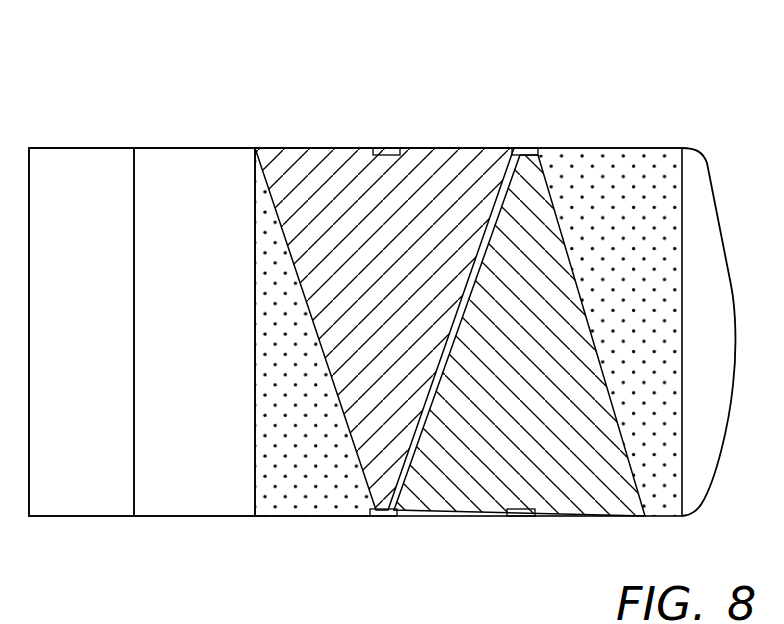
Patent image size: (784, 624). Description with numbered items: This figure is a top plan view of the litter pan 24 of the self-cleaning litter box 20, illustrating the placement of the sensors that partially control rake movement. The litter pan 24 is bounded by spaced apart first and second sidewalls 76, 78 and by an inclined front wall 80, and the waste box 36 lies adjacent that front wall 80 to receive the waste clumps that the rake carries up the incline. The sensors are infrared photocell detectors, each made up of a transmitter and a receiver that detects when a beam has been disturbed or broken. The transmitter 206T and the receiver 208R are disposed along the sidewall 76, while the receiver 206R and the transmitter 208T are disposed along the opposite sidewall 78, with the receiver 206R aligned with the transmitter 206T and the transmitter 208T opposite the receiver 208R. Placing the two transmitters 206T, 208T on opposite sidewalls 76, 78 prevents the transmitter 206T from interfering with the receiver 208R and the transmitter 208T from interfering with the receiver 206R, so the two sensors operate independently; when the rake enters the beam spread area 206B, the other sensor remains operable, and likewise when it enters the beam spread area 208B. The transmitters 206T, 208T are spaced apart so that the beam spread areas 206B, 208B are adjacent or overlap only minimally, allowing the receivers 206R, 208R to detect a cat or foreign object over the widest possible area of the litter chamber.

The self-cleaning litter box 20 is at (481, 108).
The litter pan 24 is at (181, 147).
The waste box 36 is at (89, 377).
The inclined front wall 80 is at (206, 382).
The first sidewall 76 is at (314, 147).
The second sidewall 78 is at (270, 518).
The beam spread area 208B is at (421, 286).
The beam spread area 206B is at (563, 411).
The receiver 208R is at (386, 147).
The transmitter 206T is at (525, 147).
The transmitter 208T is at (385, 518).
The receiver 206R is at (520, 518).